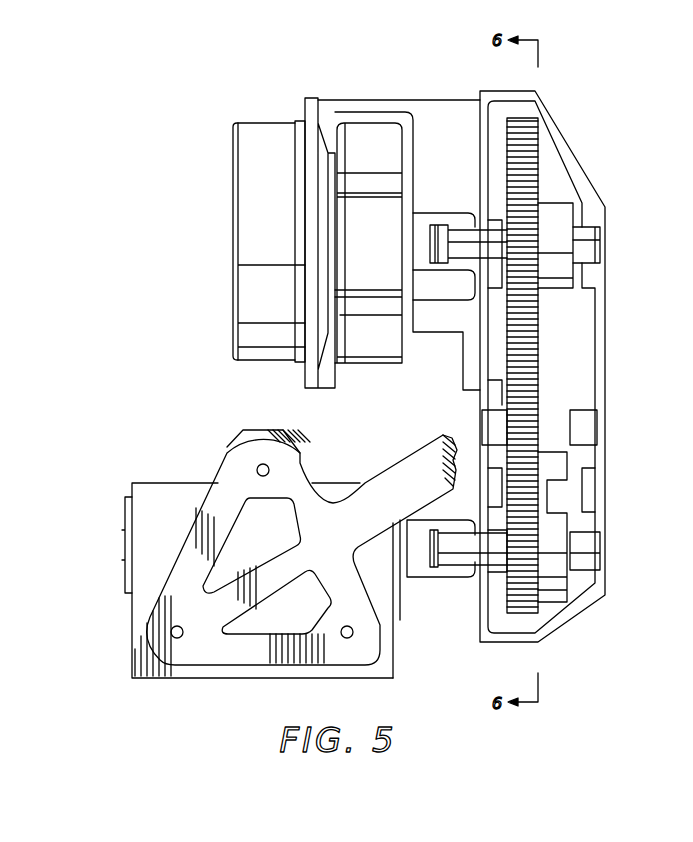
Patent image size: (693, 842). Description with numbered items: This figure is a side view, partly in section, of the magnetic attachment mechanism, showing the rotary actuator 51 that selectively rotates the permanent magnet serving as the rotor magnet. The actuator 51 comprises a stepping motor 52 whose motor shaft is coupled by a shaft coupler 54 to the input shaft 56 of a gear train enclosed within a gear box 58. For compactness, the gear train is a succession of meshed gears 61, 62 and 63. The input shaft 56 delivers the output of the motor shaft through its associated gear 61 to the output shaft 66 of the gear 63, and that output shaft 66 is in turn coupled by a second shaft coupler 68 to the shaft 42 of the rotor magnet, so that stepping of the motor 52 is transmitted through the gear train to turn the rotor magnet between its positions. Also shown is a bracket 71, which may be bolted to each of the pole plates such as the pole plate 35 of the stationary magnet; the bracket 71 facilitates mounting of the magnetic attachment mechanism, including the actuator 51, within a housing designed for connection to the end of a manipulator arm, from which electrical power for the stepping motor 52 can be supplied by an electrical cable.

The pole plate 35 is at (150, 510).
The shaft of the rotor magnet 42 is at (413, 542).
The actuator 51 is at (316, 94).
The stepping motor 52 is at (250, 150).
The shaft coupler 54 is at (443, 218).
The input shaft 56 is at (455, 263).
The gear box 58 is at (578, 142).
The gear 61 is at (538, 326).
The gear 62 is at (575, 405).
The gear 63 is at (583, 513).
The output shaft 66 is at (468, 572).
The shaft coupler 68 is at (420, 578).
The bracket 71 is at (220, 507).